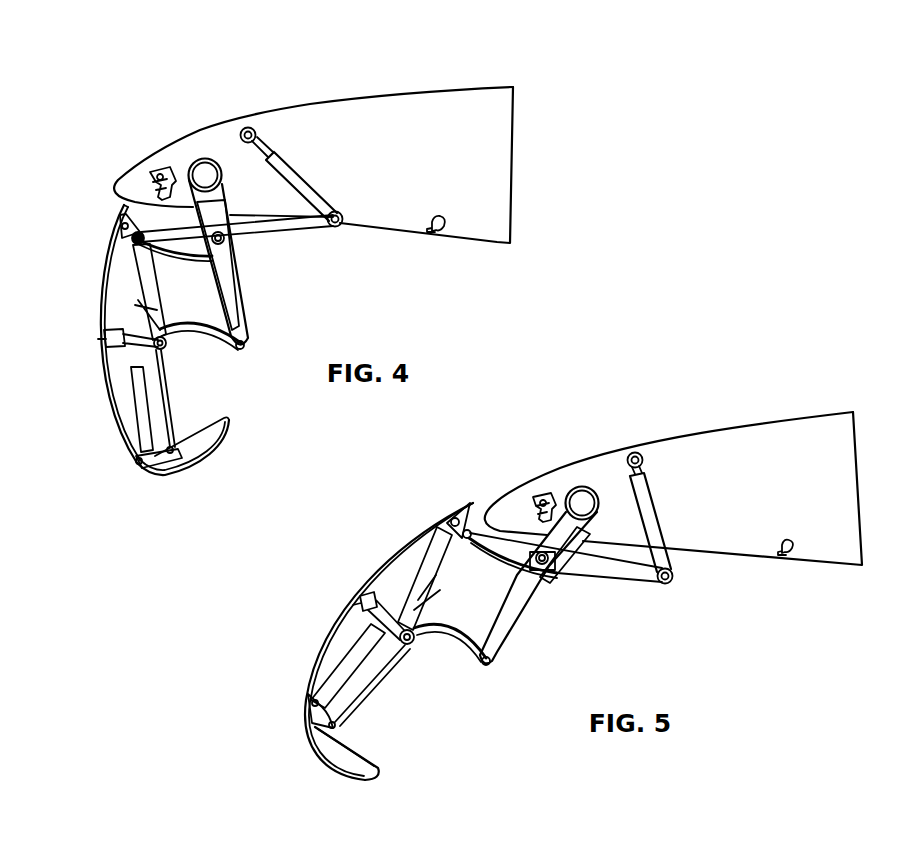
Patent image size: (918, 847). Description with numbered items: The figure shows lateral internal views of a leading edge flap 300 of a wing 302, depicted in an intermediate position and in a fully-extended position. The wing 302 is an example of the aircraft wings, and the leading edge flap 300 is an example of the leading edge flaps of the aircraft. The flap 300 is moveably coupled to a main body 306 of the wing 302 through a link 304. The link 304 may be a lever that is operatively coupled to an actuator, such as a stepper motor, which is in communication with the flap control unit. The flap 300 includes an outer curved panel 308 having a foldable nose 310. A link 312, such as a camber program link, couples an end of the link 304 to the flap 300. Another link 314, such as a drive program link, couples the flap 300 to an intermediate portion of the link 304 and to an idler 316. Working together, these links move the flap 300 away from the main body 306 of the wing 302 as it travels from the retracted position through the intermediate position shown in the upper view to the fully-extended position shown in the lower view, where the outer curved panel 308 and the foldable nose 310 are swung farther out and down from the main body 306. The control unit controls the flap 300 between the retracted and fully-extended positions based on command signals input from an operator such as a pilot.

In FIG. 4, the leading edge flap 300 is at (457, 62).
In FIG. 5, the leading edge flap 300 is at (690, 373).
In FIG. 4, the wing 302 is at (100, 372).
In FIG. 5, the wing 302 is at (327, 633).
In FIG. 4, the link 304 is at (224, 215).
In FIG. 5, the link 304 is at (543, 593).
In FIG. 4, the main body 306 is at (500, 87).
In FIG. 5, the main body 306 is at (795, 410).
In FIG. 4, the outer curved panel 308 is at (105, 260).
In FIG. 5, the outer curved panel 308 is at (392, 558).
In FIG. 4, the foldable nose 310 is at (202, 463).
In FIG. 5, the foldable nose 310 is at (340, 773).
In FIG. 4, the link 312 is at (208, 343).
In FIG. 5, the link 312 is at (447, 650).
In FIG. 4, the link 314 is at (278, 240).
In FIG. 5, the link 314 is at (607, 580).
In FIG. 4, the idler 316 is at (308, 143).
In FIG. 5, the idler 316 is at (676, 487).